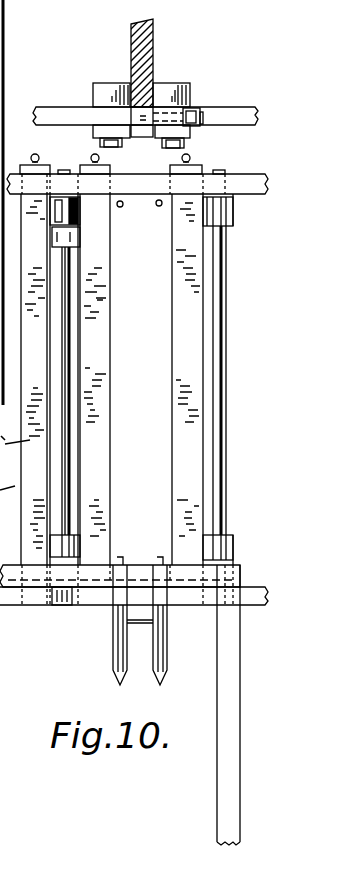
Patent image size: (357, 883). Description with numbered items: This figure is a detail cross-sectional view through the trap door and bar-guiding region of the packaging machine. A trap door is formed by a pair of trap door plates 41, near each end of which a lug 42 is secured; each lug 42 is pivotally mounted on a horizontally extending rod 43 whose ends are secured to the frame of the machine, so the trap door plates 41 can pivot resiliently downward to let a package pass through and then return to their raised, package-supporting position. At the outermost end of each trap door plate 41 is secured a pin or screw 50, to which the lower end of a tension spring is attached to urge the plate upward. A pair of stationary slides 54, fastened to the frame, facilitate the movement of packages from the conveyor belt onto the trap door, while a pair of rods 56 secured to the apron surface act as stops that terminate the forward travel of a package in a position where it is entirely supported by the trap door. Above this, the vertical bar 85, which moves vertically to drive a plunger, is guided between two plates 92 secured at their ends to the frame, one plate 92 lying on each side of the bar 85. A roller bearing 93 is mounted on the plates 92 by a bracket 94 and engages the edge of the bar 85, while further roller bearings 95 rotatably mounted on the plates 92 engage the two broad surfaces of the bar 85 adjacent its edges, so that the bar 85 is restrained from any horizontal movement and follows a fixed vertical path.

The vertical bar 85 is at (153, 38).
The plate 92 is at (58, 107).
The roller bearing 95 is at (108, 83).
The roller bearing 93 is at (141, 138).
The bracket 94 is at (198, 112).
The pin or screw 50 is at (35, 155).
The trap door plate 41 is at (98, 323).
The rod 43 is at (225, 436).
The lug 42 is at (70, 234).
The rod 56 is at (139, 210).
The stationary slide 54 is at (156, 650).